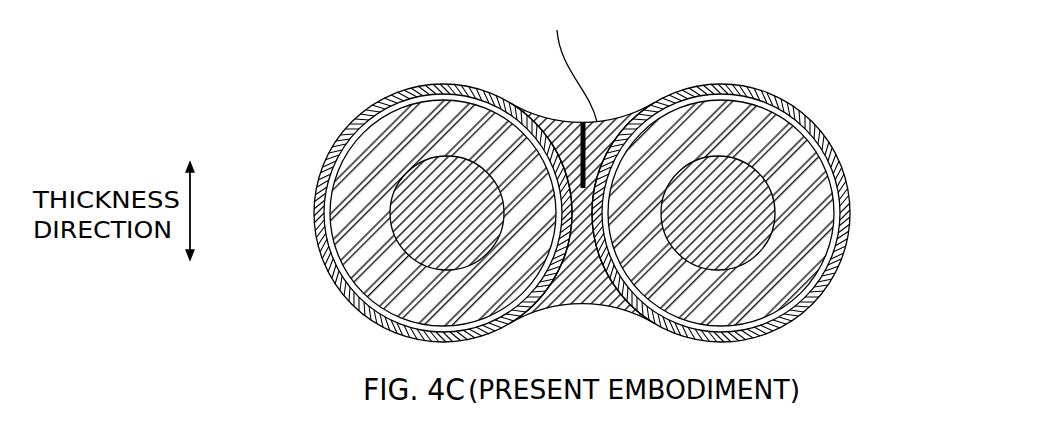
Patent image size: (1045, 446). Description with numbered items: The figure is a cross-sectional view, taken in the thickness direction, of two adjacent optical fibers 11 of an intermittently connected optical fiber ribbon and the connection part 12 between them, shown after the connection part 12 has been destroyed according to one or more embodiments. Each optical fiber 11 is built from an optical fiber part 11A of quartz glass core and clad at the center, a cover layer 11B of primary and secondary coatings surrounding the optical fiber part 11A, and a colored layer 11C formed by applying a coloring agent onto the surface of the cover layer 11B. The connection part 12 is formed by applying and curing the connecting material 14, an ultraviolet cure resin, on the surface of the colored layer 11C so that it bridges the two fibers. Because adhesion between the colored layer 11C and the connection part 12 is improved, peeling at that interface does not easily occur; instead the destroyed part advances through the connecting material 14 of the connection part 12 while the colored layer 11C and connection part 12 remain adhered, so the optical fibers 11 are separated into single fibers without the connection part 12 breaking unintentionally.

The optical fiber 11 is at (581, 171).
The optical fiber part 11A is at (415, 178).
The cover layer 11B is at (365, 186).
The colored layer 11C is at (325, 232).
The connection part 12 is at (584, 122).
The connecting material 14 is at (347, 298).